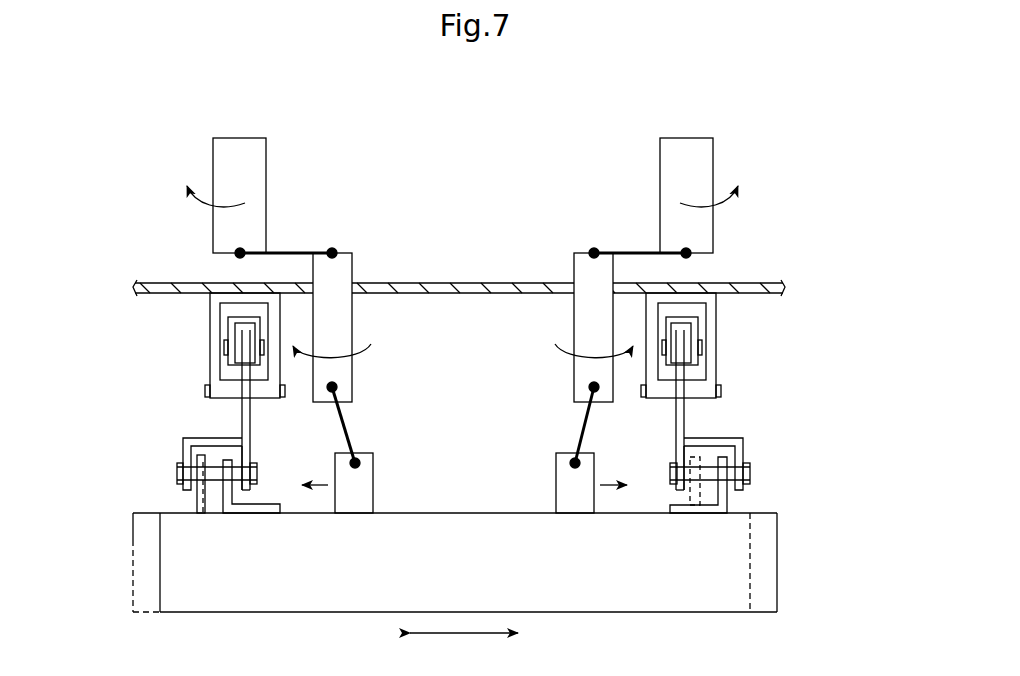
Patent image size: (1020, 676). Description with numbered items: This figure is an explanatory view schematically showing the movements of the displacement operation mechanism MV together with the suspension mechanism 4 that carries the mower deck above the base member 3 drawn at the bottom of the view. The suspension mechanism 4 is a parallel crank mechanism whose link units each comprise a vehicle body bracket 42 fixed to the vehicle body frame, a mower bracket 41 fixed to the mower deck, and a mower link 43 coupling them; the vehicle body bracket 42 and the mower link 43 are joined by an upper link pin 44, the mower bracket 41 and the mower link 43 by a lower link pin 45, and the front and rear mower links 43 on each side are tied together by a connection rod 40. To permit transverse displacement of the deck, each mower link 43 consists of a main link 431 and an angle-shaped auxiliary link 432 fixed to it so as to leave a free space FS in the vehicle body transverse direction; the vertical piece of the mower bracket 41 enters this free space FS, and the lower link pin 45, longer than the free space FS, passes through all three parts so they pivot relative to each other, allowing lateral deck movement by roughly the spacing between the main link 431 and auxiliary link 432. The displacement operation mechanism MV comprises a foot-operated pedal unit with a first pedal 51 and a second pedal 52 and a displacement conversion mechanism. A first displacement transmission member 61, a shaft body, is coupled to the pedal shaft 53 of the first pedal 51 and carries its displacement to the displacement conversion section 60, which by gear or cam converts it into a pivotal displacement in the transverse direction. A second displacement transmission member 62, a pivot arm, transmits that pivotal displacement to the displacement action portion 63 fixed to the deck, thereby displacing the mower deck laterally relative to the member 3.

The base 3 is at (133, 587).
The suspension mechanism 4 is at (200, 315).
The connection rod 40 is at (226, 342).
The mower bracket 41 is at (188, 515).
The vehicle body bracket 42 is at (217, 312).
The mower link 43 is at (228, 415).
The upper link pin 44 is at (233, 385).
The lower link pin 45 is at (177, 473).
The main link 431 is at (250, 462).
The auxiliary link 432 is at (183, 460).
The first pedal 51 is at (266, 195).
The second pedal 52 is at (660, 197).
The pedal shaft 53 is at (288, 252).
The displacement conversion section 60 is at (352, 256).
The first displacement transmission member 61 is at (326, 383).
The second displacement transmission member 62 is at (352, 435).
The displacement action portion 63 is at (362, 490).
The displacement operation mechanism MV is at (453, 235).
The free space FS is at (213, 452).